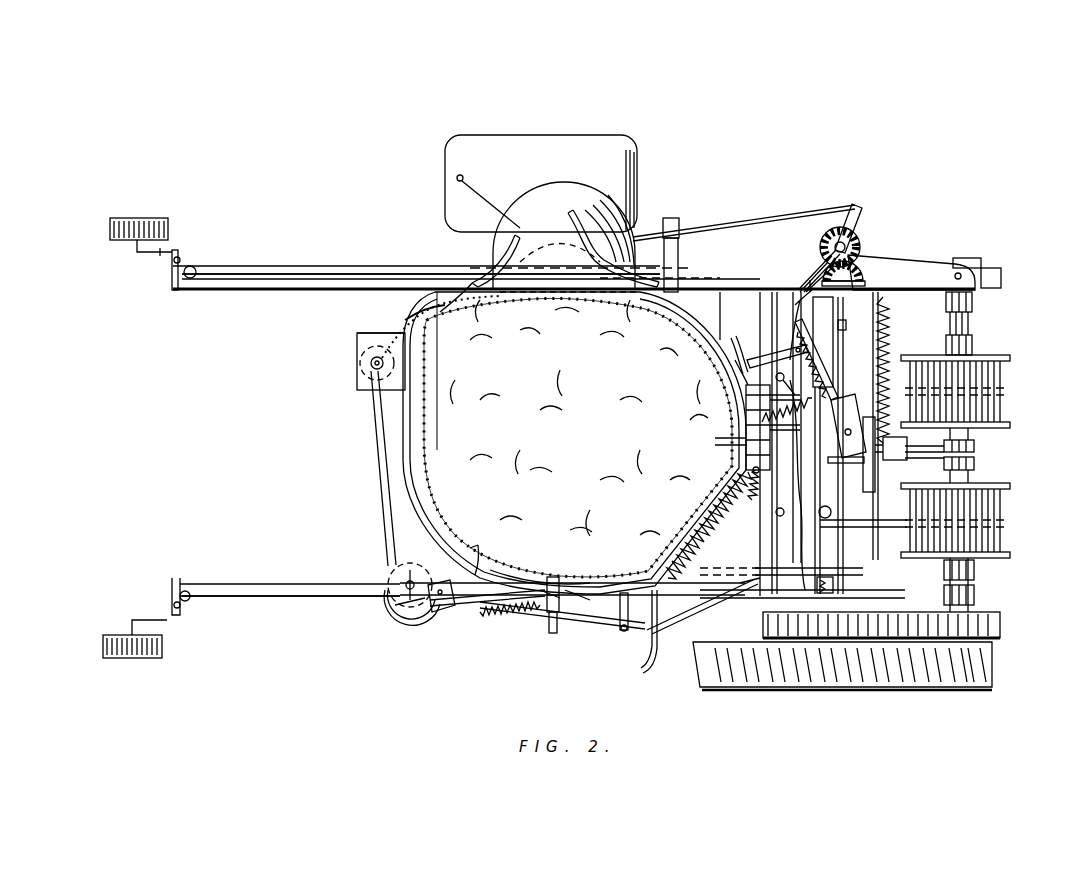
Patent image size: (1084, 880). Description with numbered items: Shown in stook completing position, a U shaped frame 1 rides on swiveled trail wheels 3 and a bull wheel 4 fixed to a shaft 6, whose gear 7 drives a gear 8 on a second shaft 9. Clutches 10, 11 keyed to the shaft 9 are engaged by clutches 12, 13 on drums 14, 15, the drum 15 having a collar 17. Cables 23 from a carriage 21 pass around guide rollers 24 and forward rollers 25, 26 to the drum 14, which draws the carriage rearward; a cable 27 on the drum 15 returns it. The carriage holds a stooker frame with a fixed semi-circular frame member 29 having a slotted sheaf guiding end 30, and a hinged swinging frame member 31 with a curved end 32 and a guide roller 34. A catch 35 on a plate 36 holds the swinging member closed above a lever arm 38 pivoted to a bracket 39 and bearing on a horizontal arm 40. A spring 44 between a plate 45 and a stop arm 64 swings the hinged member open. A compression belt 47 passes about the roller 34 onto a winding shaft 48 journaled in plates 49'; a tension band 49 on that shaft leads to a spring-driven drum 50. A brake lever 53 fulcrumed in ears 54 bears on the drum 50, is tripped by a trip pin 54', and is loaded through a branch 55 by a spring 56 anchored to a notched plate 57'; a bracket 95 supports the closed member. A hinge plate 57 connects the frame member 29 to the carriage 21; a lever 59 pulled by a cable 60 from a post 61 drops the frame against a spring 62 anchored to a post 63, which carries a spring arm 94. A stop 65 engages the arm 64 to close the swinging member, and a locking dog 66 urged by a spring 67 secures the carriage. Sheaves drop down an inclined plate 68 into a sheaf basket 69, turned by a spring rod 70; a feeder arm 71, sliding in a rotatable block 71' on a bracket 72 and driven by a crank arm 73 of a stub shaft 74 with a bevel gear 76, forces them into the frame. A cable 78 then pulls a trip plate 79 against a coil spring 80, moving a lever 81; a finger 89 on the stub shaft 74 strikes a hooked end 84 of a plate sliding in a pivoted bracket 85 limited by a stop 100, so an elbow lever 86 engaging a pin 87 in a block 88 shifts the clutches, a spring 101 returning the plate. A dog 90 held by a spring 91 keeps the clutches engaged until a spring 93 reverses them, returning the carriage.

The U shaped frame 1 is at (240, 296).
The swiveled trail wheels 3 is at (120, 242).
The bull or drive wheel 4 is at (928, 688).
The shaft 6 is at (842, 520).
The gear 7 is at (765, 620).
The gear 8 is at (1002, 628).
The second shaft 9 is at (975, 325).
The clutch 10 is at (975, 592).
The clutch 11 is at (972, 302).
The clutch 12 is at (975, 570).
The clutch 13 is at (975, 347).
The drum 14 is at (1006, 502).
The drum 15 is at (1006, 378).
The collar 17 is at (872, 272).
The carriage 21 is at (740, 320).
The cords or cables 23 is at (220, 265).
The guide pulleys or rollers 24 is at (195, 648).
The forward guide pulley or roller 25 is at (810, 280).
The forward guide pulley or roller 26 is at (812, 600).
The cable 27 is at (1006, 402).
The fixed semi-circular frame member 29 is at (722, 290).
The sheaf guiding end 30 is at (578, 233).
The swinging frame member 31 is at (402, 506).
The curved end 32 is at (505, 252).
The anti-friction guide roller 34 is at (420, 310).
The catch 35 is at (546, 632).
The plate or bracket 36 is at (553, 636).
The lever arm 38 is at (580, 620).
The top plate or bracket 39 is at (396, 542).
The horizontal arm 40 is at (626, 630).
The spring 44 is at (712, 522).
The plate 45 is at (780, 450).
The compression belt 47 is at (418, 302).
The winding shaft 48 is at (355, 365).
The tension band 49 is at (368, 468).
The plates 49' is at (352, 316).
The drum 50 is at (385, 566).
The brake lever 53 is at (488, 540).
The ears 54 is at (482, 561).
The trip pin 54' is at (406, 628).
The branch 55 is at (510, 615).
The spring 56 is at (512, 625).
The hinge plate 57 is at (726, 451).
The notched plate 57' is at (612, 653).
The lever 59 is at (760, 418).
The cord or cable 60 is at (790, 528).
The post 61 is at (747, 597).
The spring 62 is at (765, 393).
The post 63 is at (758, 430).
The stop arm 64 is at (660, 660).
The stop 65 is at (692, 612).
The locking dog 66 is at (862, 578).
The spring 67 is at (860, 590).
The inclined plate 68 is at (530, 143).
The sheaf basket 69 is at (566, 237).
The spring rod 70 is at (458, 179).
The feeder arm 71 is at (662, 218).
The rotatable block 71' is at (672, 209).
The bracket 72 is at (672, 222).
The crank arm 73 is at (866, 214).
The stub shaft 74 is at (862, 250).
The bevel gear 76 is at (862, 238).
The cord or cable 78 is at (572, 585).
The trip plate 79 is at (745, 345).
The coil spring 80 is at (765, 377).
The lever 81 is at (768, 352).
The hooked outer end 84 is at (800, 290).
The small bracket 85 is at (845, 370).
The elbow lever 86 is at (975, 446).
The pin 87 is at (975, 462).
The block 88 is at (975, 465).
The finger 89 is at (814, 276).
The dog 90 is at (880, 470).
The spring 91 is at (882, 432).
The spring 93 is at (888, 328).
The spring arm 94 is at (847, 396).
The bracket 95 is at (556, 636).
The stop 100 is at (846, 326).
The spring 101 is at (800, 340).